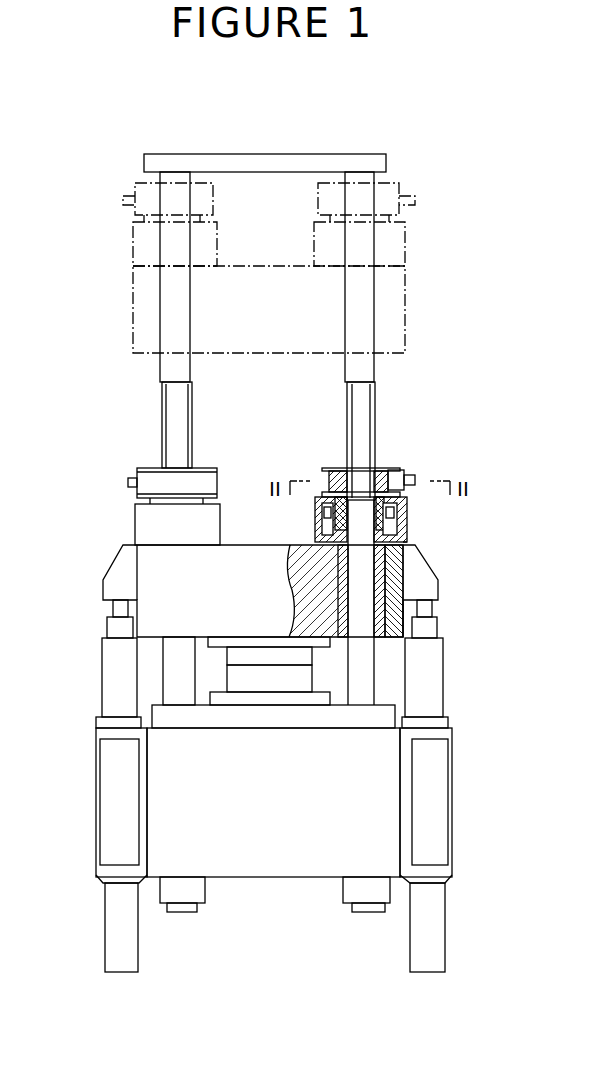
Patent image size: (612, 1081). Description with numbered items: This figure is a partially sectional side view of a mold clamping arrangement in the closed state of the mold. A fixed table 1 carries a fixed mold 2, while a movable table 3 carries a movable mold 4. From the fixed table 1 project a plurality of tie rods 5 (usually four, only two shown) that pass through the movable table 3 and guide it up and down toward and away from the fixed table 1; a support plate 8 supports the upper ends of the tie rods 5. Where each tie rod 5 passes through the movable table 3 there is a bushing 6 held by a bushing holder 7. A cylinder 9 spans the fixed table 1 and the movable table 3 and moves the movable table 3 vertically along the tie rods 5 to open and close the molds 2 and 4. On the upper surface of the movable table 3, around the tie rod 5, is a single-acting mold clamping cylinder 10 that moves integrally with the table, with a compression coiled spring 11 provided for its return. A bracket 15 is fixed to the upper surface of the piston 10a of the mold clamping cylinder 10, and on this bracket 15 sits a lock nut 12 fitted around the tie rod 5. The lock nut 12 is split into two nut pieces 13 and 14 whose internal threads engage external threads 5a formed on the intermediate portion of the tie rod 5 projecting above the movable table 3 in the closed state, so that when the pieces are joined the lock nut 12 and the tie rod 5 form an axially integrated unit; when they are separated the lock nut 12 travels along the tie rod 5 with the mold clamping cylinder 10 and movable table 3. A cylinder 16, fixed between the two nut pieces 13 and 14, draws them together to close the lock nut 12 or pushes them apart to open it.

The fixed table 1 is at (282, 886).
The fixed mold 2 is at (300, 683).
The movable table 3 is at (409, 349).
The movable mold 4 is at (300, 658).
The tie rod 5 is at (190, 371).
The external threads 5a is at (162, 430).
The bushing 6 is at (393, 566).
The bushing holder 7 is at (385, 590).
The support plate 8 is at (280, 154).
The cylinder 9 is at (96, 800).
The mold clamping cylinder 10 is at (412, 541).
The piston 10a is at (390, 500).
The compression coiled spring 11 is at (315, 525).
The lock nut 12 is at (334, 460).
The nut piece 13 is at (329, 476).
The nut piece 14 is at (385, 471).
The bracket 15 is at (336, 506).
The cylinder 16 is at (404, 478).